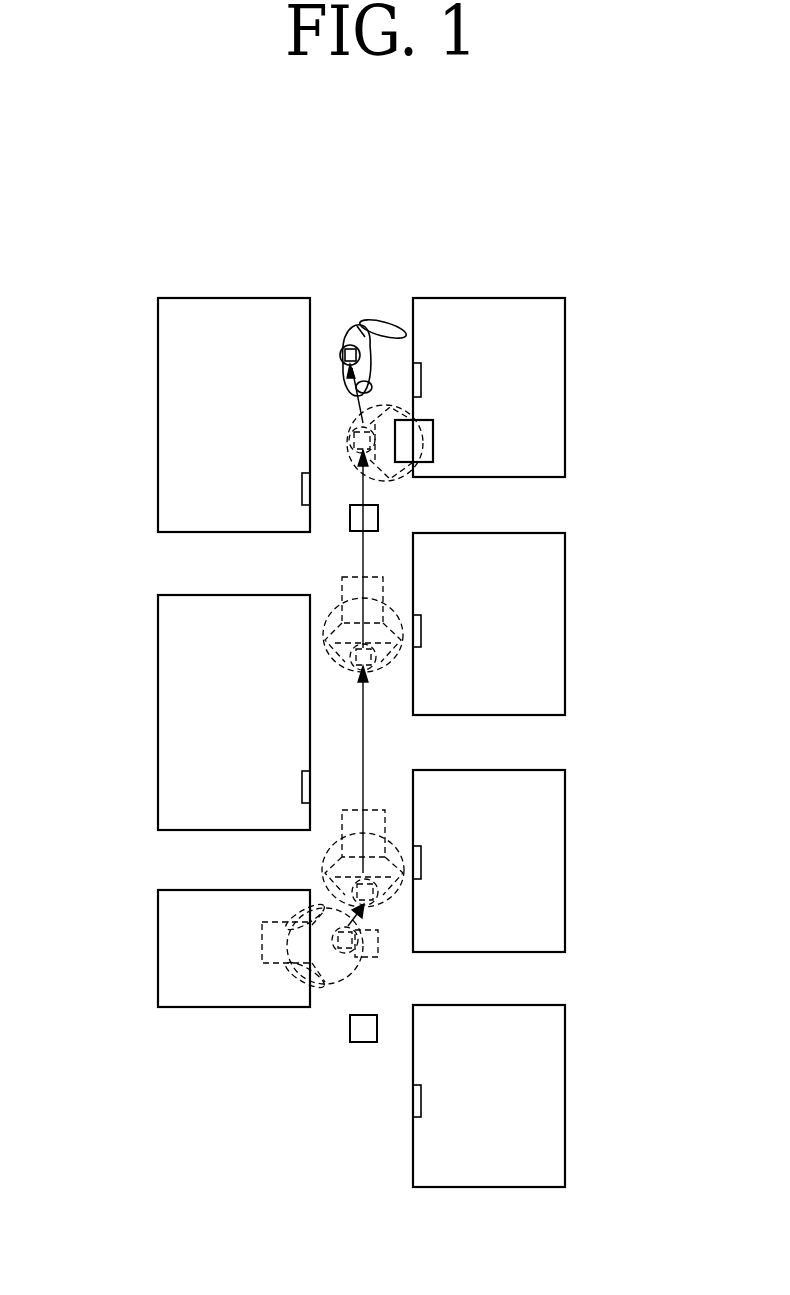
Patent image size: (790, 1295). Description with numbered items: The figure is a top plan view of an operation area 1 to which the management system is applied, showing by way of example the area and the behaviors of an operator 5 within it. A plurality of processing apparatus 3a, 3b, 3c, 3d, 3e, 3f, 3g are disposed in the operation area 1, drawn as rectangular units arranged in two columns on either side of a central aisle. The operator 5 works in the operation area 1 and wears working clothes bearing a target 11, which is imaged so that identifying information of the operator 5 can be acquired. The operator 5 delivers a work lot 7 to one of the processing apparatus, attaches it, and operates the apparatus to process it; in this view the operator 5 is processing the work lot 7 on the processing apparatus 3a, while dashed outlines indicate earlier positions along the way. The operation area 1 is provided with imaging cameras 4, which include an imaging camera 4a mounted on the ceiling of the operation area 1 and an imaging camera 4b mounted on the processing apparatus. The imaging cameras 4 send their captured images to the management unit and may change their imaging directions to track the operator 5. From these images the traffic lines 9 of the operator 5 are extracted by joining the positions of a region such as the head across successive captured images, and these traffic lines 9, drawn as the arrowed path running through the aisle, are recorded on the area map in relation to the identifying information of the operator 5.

The operation area 1 is at (146, 230).
The processing apparatus 3a is at (565, 360).
The processing apparatus 3b is at (565, 622).
The processing apparatus 3c is at (565, 866).
The processing apparatus 3d is at (565, 1112).
The processing apparatus 3e is at (158, 393).
The processing apparatus 3f is at (158, 706).
The processing apparatus 3g is at (158, 944).
The imaging cameras 4 is at (632, 405).
The imaging camera 4a is at (350, 1030).
The imaging camera 4b is at (421, 378).
The operator 5 is at (358, 324).
The work lot 7 is at (433, 443).
The traffic lines 9 is at (363, 748).
The target 11 is at (345, 356).